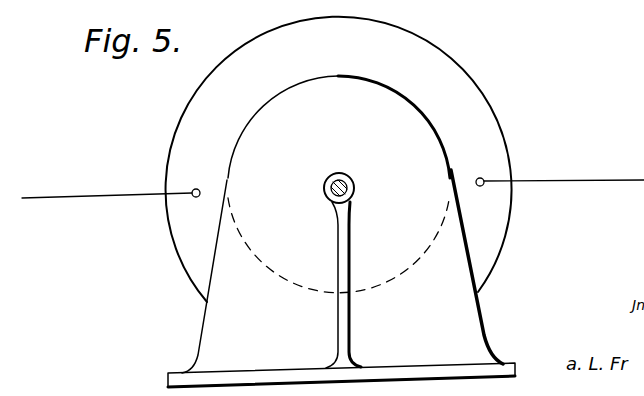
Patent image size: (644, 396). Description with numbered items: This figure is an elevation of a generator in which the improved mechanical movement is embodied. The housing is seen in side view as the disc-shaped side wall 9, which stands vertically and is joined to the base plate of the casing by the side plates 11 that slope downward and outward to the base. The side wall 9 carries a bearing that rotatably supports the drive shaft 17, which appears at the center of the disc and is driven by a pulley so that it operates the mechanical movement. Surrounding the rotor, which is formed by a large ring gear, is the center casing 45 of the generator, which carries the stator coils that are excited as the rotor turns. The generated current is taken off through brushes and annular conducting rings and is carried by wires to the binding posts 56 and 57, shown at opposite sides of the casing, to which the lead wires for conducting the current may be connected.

The side wall 9 is at (373, 87).
The center casing 45 is at (448, 84).
The drive shaft 17 is at (347, 186).
The binding post 56 is at (193, 190).
The binding post 57 is at (484, 180).
The side plate 11 is at (463, 315).